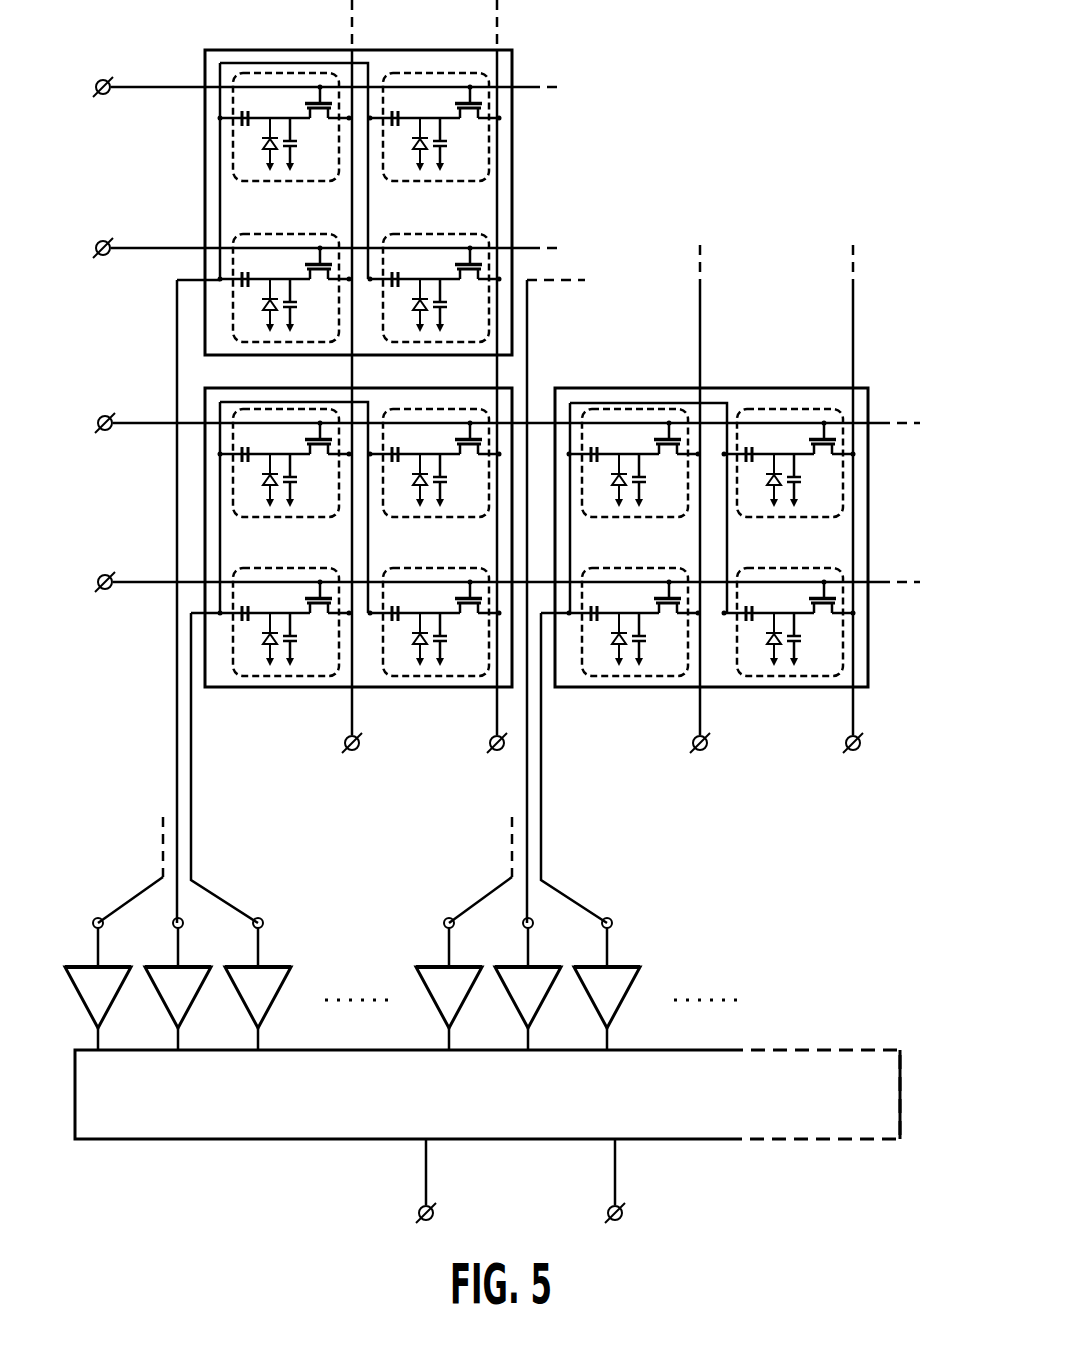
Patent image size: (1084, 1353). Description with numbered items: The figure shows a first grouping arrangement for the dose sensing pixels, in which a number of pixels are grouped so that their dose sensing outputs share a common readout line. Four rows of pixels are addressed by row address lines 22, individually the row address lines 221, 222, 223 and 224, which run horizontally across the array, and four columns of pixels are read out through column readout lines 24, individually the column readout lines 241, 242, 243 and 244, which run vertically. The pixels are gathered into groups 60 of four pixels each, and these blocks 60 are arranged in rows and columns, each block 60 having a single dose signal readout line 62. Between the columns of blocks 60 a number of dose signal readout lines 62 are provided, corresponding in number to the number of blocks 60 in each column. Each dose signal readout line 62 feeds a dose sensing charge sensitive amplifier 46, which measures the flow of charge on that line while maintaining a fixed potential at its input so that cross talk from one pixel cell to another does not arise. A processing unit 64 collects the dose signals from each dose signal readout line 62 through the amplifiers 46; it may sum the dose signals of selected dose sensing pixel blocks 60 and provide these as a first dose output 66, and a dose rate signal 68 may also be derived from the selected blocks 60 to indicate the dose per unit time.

The row address lines 22 is at (506, 313).
The row address line 221 is at (155, 85).
The row address line 222 is at (155, 246).
The row address line 223 is at (142, 421).
The row address line 224 is at (143, 580).
The column readout lines 24 is at (604, 376).
The column readout line 241 is at (352, 710).
The column readout line 242 is at (497, 710).
The column readout line 243 is at (700, 710).
The column readout line 244 is at (853, 710).
The dose sensing charge sensitive amplifier 46 is at (278, 980).
The groups of four pixels 60 is at (425, 50).
The dose signal readout line 62 is at (177, 663).
The processing unit 64 is at (699, 1051).
The first dose output 66 is at (428, 1168).
The dose rate signal 68 is at (617, 1168).